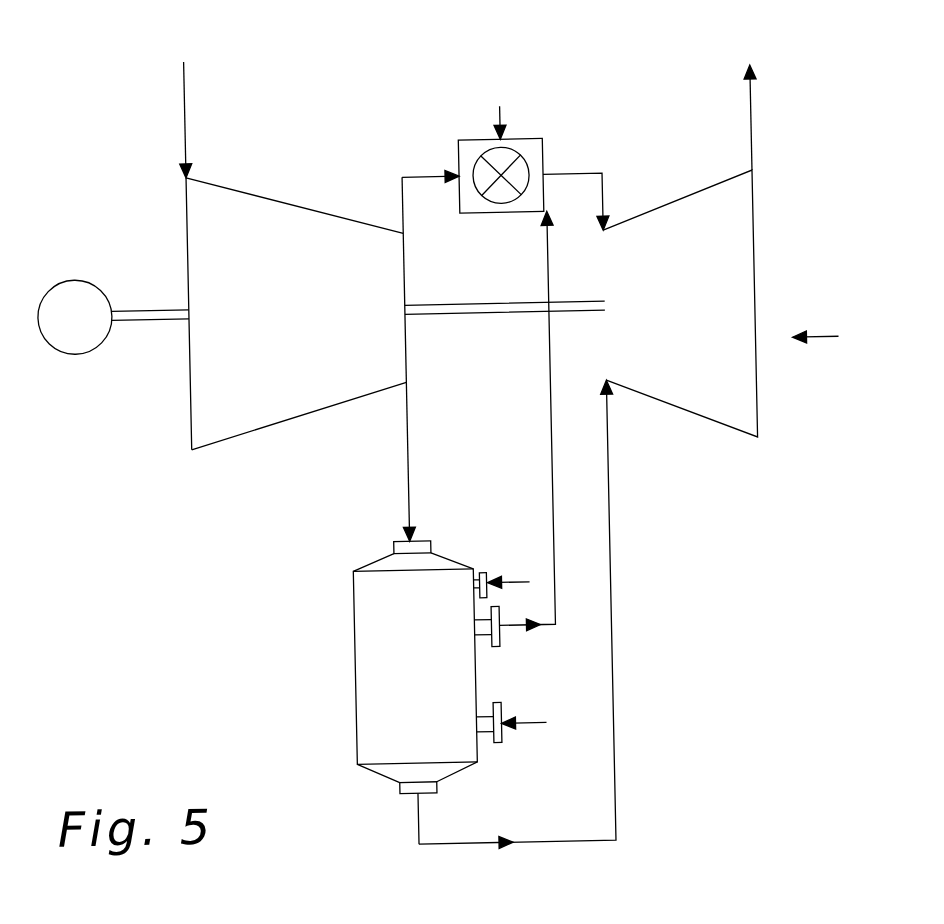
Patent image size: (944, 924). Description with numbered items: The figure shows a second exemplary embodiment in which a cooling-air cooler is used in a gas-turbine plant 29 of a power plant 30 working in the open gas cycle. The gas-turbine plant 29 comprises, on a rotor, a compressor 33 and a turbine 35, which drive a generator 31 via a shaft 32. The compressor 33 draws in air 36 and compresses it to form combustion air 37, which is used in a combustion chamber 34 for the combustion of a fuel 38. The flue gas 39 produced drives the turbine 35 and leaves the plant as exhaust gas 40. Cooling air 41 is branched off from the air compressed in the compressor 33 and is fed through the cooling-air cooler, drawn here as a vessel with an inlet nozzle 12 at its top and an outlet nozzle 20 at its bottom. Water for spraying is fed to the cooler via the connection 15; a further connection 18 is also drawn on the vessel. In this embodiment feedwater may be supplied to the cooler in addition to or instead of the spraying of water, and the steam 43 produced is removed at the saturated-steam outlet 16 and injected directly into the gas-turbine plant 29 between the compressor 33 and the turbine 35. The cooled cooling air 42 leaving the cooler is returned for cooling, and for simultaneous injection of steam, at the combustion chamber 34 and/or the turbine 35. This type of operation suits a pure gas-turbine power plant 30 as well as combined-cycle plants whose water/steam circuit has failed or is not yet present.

The inlet nozzle 12 is at (421, 544).
The connection 15 is at (485, 575).
The saturated-steam outlet 16 is at (497, 644).
The inlet connection 18 is at (496, 739).
The outlet nozzle 20 is at (393, 788).
The gas-turbine plant 29 is at (841, 336).
The power plant 30 is at (282, 568).
The generator 31 is at (79, 282).
The shaft 32 is at (153, 315).
The compressor 33 is at (279, 208).
The combustion chamber 34 is at (539, 139).
The turbine 35 is at (740, 236).
The air 36 is at (190, 119).
The combustion air 37 is at (433, 176).
The fuel 38 is at (507, 107).
The flue gas 39 is at (608, 188).
The exhaust gas 40 is at (758, 131).
The cooling air 41 is at (408, 423).
The cooled cooling air 42 is at (608, 581).
The steam 43 is at (552, 480).